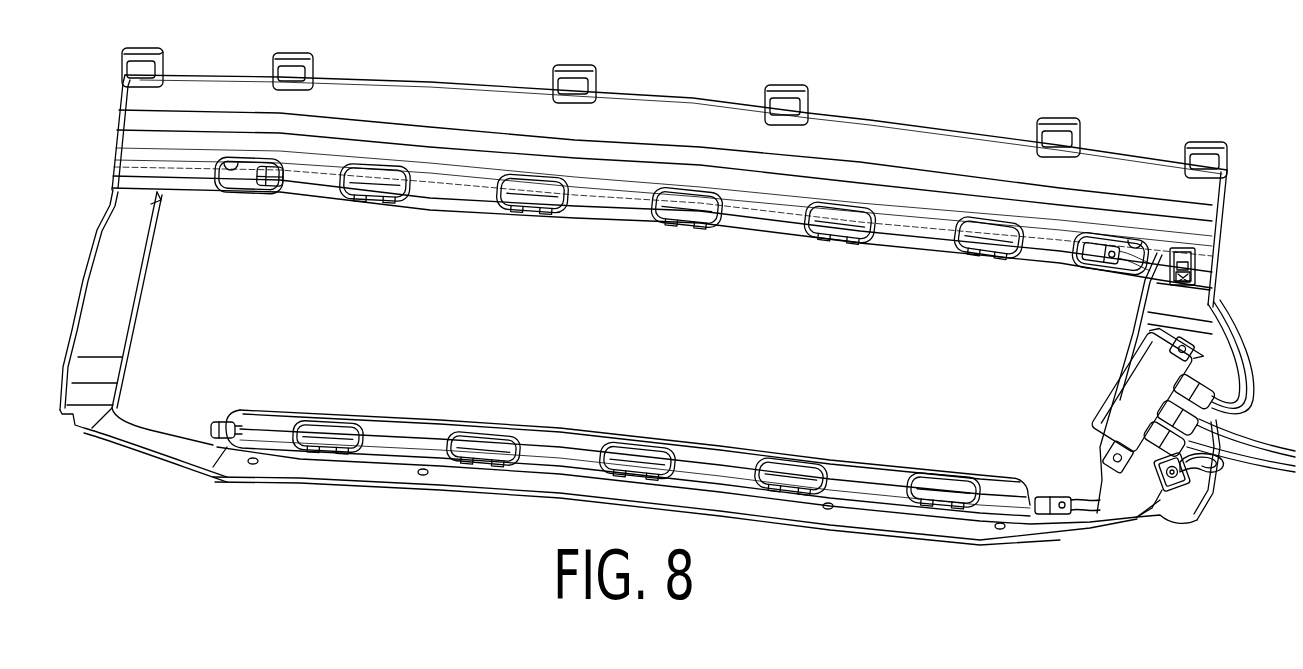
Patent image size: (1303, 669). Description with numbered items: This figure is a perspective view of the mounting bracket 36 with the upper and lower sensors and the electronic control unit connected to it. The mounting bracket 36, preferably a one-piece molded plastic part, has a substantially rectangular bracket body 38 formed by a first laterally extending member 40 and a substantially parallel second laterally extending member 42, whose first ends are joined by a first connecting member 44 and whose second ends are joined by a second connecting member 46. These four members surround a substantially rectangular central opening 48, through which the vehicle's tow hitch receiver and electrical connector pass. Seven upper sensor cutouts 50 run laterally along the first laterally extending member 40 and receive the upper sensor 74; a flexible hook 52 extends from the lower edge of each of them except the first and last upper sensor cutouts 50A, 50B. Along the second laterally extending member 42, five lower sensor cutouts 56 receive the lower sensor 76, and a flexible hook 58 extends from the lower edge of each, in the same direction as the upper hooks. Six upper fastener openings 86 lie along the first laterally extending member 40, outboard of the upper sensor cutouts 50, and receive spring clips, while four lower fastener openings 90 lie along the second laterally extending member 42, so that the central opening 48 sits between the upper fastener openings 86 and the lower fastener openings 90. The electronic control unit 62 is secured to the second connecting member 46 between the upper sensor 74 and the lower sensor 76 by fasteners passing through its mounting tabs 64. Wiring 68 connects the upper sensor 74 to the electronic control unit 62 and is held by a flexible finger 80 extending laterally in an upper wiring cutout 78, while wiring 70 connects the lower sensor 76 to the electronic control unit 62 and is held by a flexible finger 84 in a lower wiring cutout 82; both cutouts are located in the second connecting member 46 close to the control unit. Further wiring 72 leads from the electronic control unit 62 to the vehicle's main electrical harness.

The mounting bracket 36 is at (694, 97).
The bracket body 38 is at (880, 110).
The first laterally extending member 40 is at (515, 100).
The second laterally extending member 42 is at (473, 478).
The first connecting member 44 is at (110, 272).
The second connecting member 46 is at (1185, 330).
The central opening 48 is at (128, 310).
The upper sensor cutouts 50 is at (385, 172).
The first upper sensor cutout 50A is at (233, 163).
The last upper sensor cutout 50B is at (1135, 243).
The flexible hook 52 is at (388, 197).
The lower sensor cutouts 56 is at (802, 462).
The flexible hook 58 is at (357, 430).
The electronic control unit 62 is at (1100, 386).
The mounting tabs 64 is at (1172, 345).
The wiring 68 is at (1246, 352).
The wiring 70 is at (1200, 478).
The wiring 72 is at (1236, 466).
The upper sensor 74 is at (663, 214).
The lower sensor 76 is at (470, 434).
The upper wiring cutout 78 is at (1192, 260).
The flexible finger 80 is at (1196, 272).
The lower wiring cutout 82 is at (1168, 490).
The flexible finger 84 is at (1167, 492).
The upper fastener openings 86 is at (293, 60).
The lower fastener openings 90 is at (828, 510).